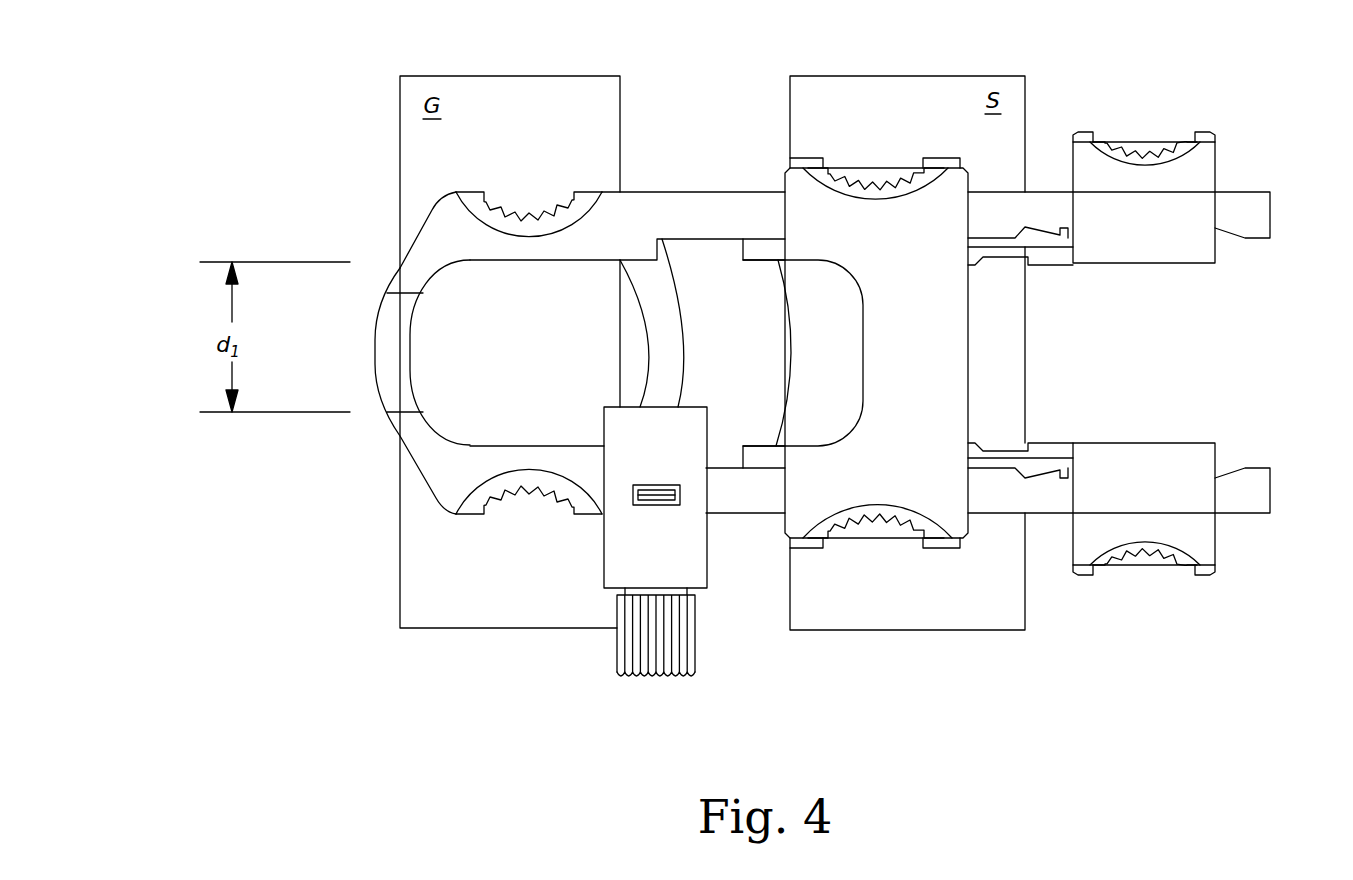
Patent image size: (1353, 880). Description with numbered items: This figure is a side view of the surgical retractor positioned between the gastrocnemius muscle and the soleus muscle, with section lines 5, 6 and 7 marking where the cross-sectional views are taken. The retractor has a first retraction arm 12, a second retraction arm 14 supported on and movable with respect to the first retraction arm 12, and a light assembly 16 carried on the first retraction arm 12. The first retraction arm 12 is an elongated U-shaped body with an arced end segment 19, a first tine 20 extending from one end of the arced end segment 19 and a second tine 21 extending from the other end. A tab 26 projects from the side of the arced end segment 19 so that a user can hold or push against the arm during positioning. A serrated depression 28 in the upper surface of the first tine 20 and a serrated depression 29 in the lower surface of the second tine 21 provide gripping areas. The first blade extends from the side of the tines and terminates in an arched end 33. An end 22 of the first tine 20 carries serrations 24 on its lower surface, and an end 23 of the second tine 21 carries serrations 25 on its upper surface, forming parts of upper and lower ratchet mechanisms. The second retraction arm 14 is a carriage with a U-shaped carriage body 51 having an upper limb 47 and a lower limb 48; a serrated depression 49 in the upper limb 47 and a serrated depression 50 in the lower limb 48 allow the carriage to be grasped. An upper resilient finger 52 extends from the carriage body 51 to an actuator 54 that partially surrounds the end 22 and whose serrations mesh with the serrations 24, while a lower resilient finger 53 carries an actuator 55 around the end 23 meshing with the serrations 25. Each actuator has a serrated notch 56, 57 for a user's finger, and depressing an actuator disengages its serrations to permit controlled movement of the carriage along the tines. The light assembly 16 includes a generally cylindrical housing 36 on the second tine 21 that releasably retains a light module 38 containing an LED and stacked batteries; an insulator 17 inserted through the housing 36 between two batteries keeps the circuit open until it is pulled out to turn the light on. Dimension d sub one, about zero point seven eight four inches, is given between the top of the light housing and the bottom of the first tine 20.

The section line 5- 5 is at (1268, 375).
The section line 6- 6 is at (712, 743).
The section line 7- 7 is at (810, 688).
The first retraction arm 12 is at (376, 511).
The second retraction arm 14 is at (981, 596).
The light assembly 16 is at (586, 604).
The insulator 17 is at (655, 487).
The arced end segment 19 is at (402, 278).
The first tine 20 is at (683, 197).
The second tine 21 is at (748, 508).
The end of the first tine 22 is at (1258, 212).
The end of the second tine 23 is at (1258, 490).
The serrations 24 is at (1050, 236).
The serrations 25 is at (1048, 478).
The tab 26 is at (386, 352).
The depression 28 is at (529, 198).
The depression 29 is at (522, 498).
The arched end 33 is at (670, 354).
The housing 36 is at (638, 559).
The light module 38 is at (630, 676).
The upper limb 47 is at (812, 160).
The lower limb 48 is at (803, 548).
The depression 49 is at (878, 171).
The depression 50 is at (875, 539).
The carriage body 51 is at (950, 354).
The upper resilient finger 52 is at (990, 267).
The lower resilient finger 53 is at (1000, 445).
The actuator 54 is at (1140, 255).
The actuator 55 is at (1135, 457).
The serrated notch 56 is at (1128, 148).
The serrated notch 57 is at (1135, 566).